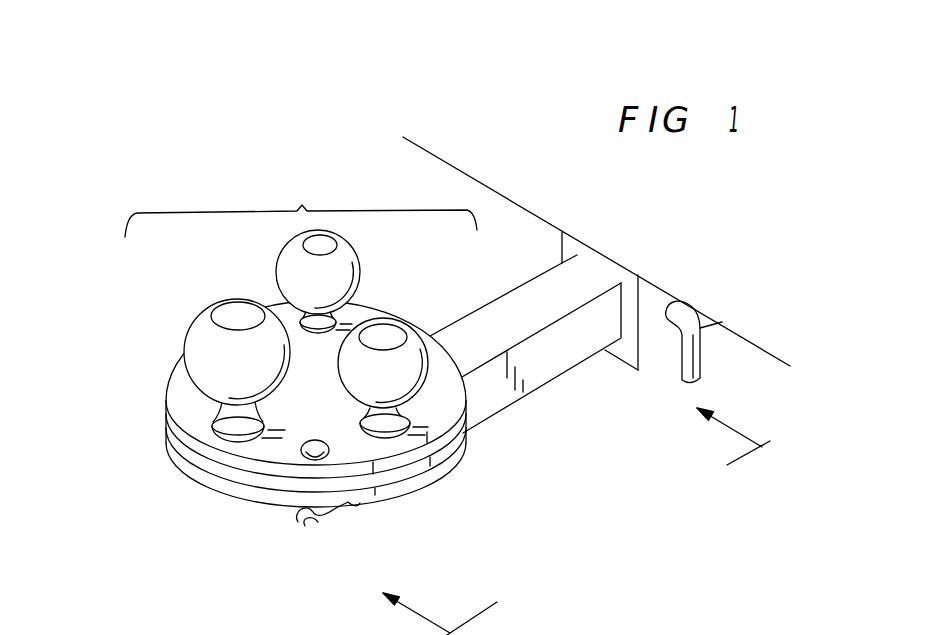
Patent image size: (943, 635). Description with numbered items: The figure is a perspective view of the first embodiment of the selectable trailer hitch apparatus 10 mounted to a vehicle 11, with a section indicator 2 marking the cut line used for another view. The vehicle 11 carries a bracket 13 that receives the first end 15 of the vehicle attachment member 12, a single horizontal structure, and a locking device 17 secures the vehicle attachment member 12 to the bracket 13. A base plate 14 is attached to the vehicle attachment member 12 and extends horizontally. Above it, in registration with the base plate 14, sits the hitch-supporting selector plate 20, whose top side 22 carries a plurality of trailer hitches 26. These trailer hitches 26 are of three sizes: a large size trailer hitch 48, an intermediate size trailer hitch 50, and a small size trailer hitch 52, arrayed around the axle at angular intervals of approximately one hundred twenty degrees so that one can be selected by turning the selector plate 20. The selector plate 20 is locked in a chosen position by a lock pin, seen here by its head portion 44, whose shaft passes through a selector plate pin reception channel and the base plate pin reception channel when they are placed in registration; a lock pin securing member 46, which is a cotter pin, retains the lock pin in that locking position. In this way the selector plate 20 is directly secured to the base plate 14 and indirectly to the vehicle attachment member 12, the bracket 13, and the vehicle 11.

The selectable trailer hitch apparatus 10 is at (147, 163).
The vehicle 11 is at (699, 255).
The vehicle attachment member 12 is at (558, 360).
The bracket 13 is at (645, 348).
The base plate 14 is at (267, 428).
The first end 15 is at (586, 278).
The locking device 17 is at (690, 347).
The hitch-supporting selector plate 20 is at (183, 430).
The top side 22 is at (276, 447).
The trailer hitches 26 is at (301, 202).
The head portion 44 is at (303, 454).
The lock pin securing member 46 is at (304, 526).
The large size trailer hitch 48 is at (210, 342).
The intermediate size trailer hitch 50 is at (406, 384).
The small size trailer hitch 52 is at (340, 262).
The section line 2- 2 is at (561, 506).